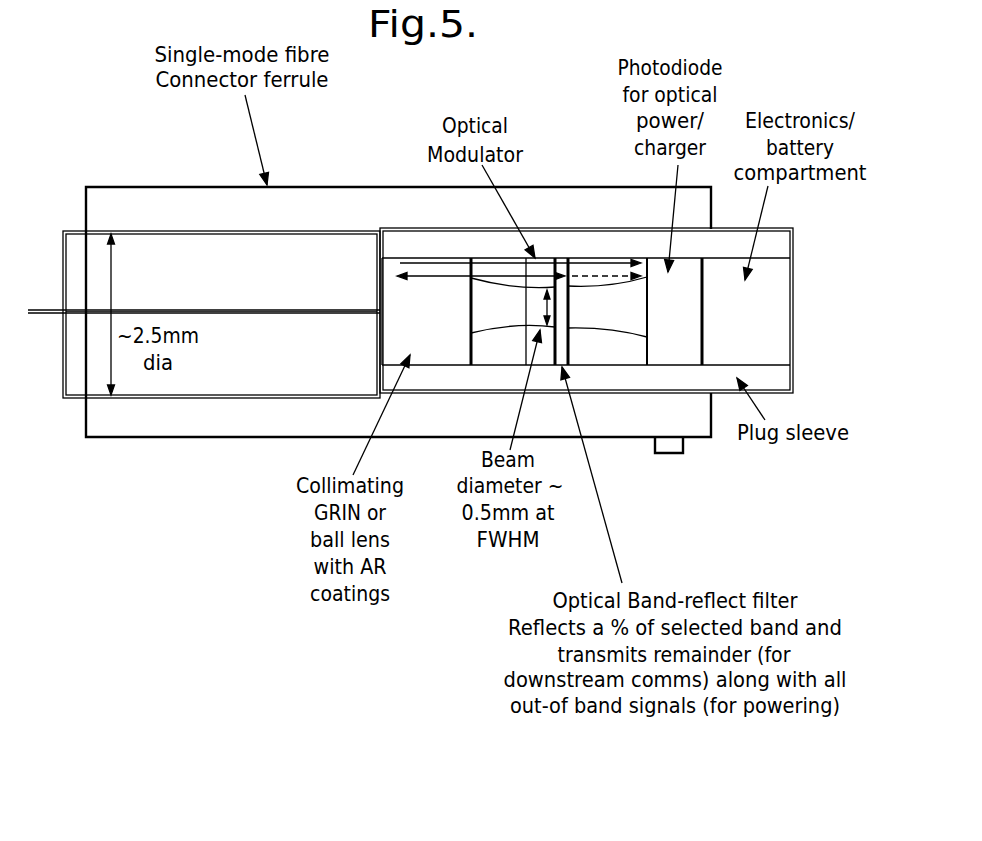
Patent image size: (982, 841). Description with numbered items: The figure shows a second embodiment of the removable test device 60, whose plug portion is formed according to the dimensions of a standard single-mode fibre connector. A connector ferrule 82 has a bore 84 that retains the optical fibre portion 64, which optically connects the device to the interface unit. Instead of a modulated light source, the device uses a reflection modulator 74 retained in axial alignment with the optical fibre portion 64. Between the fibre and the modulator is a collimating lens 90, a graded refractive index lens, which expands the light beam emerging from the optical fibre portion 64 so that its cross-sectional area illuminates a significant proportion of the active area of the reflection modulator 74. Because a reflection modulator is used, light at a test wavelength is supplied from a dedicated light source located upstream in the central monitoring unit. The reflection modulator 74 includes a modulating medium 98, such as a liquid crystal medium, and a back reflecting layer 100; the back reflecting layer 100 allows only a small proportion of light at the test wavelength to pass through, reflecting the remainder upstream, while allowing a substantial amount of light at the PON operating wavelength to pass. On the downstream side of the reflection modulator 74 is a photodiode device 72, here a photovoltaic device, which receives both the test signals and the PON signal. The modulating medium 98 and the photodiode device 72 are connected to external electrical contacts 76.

The removable test device 60 is at (453, 602).
The optical fibre portion 64 is at (203, 309).
The photodiode device 72 is at (688, 333).
The reflection modulator 74 is at (542, 258).
The external electrical contacts 76 is at (686, 448).
The connector ferrule 82 is at (250, 398).
The bore 84 is at (315, 308).
The collimating lens 90 is at (437, 367).
The modulating medium 98 is at (545, 367).
The back reflecting layer 100 is at (563, 258).